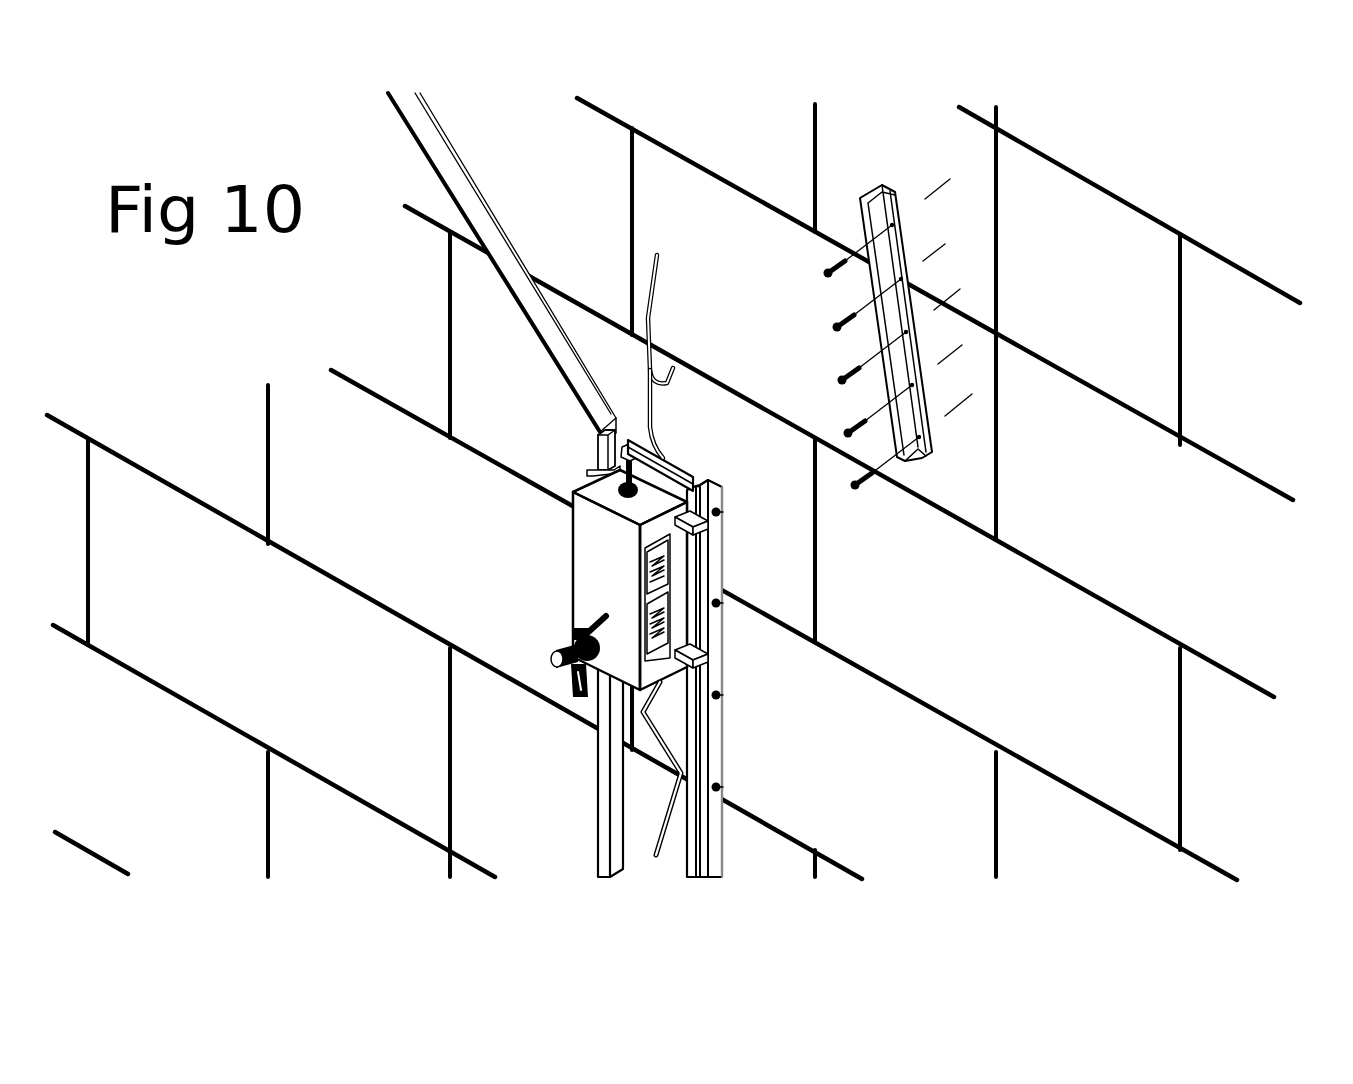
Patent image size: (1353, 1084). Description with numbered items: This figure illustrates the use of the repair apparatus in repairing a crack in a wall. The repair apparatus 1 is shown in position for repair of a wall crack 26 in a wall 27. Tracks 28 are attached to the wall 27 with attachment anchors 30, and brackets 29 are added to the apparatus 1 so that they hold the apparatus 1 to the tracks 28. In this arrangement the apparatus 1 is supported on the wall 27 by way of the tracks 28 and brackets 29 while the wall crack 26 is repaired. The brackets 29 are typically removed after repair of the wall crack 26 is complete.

The repair apparatus 1 is at (603, 572).
The wall crack 26 is at (655, 368).
The wall 27 is at (1013, 755).
The tracks 28 is at (855, 222).
The brackets 29 is at (708, 530).
The attachment anchors 30 is at (720, 514).